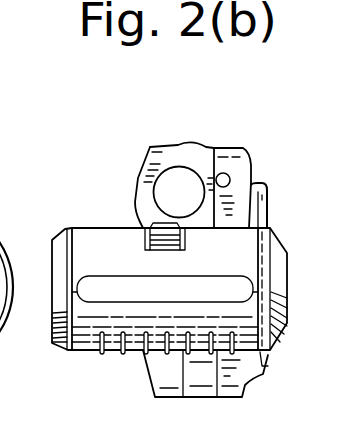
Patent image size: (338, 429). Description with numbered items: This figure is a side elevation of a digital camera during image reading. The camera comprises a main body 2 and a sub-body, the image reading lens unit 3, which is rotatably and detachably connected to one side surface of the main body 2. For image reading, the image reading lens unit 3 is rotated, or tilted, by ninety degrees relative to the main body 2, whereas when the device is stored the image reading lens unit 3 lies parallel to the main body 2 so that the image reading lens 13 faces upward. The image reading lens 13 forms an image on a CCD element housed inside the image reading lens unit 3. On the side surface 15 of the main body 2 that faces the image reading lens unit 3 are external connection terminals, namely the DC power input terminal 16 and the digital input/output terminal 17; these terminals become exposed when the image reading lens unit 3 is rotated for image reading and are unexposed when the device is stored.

The main body 2 is at (142, 167).
The image reading lens unit 3 is at (97, 228).
The image reading lens 13 is at (53, 331).
The side surface 15 is at (167, 157).
The DC power input terminal 16 is at (229, 177).
The digital input/output terminal 17 is at (182, 180).